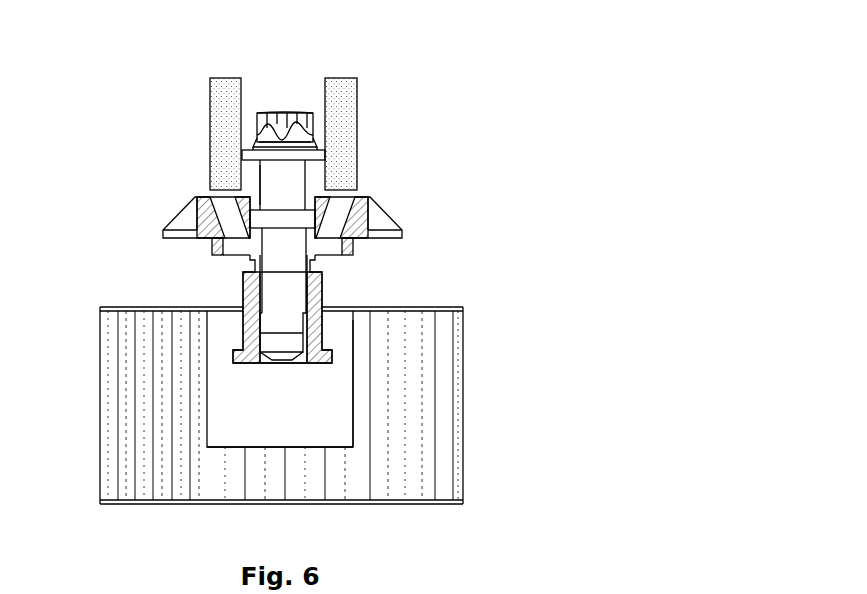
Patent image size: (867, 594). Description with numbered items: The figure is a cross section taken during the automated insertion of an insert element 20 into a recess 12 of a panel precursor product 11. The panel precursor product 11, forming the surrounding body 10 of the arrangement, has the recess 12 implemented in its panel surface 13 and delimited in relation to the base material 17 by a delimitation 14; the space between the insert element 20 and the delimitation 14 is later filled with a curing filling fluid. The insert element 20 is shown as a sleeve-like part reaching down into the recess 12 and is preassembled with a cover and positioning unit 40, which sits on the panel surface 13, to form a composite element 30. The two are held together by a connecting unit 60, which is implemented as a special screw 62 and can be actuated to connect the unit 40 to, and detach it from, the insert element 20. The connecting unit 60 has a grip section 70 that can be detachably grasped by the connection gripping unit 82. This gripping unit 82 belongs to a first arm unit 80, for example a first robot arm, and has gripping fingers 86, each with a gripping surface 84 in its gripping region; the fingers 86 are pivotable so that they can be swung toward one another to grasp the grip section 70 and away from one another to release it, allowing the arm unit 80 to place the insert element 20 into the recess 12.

The workpiece body 10 is at (330, 410).
The panel precursor product 11 is at (440, 505).
The recess 12 is at (290, 420).
The panel surface 13 is at (445, 308).
The delimitation 14 is at (352, 407).
The base material 17 is at (418, 422).
The insert element 20 is at (356, 286).
The fastening arrangement 30 is at (254, 222).
The cover and positioning unit 40 is at (394, 214).
The connecting unit 60 is at (359, 236).
The special screw 62 is at (317, 174).
The grip section 70 is at (269, 197).
The first arm unit 80 is at (367, 111).
The connection gripping unit 82 is at (367, 122).
The gripping surface 84 is at (263, 178).
The gripping fingers 86 is at (357, 118).